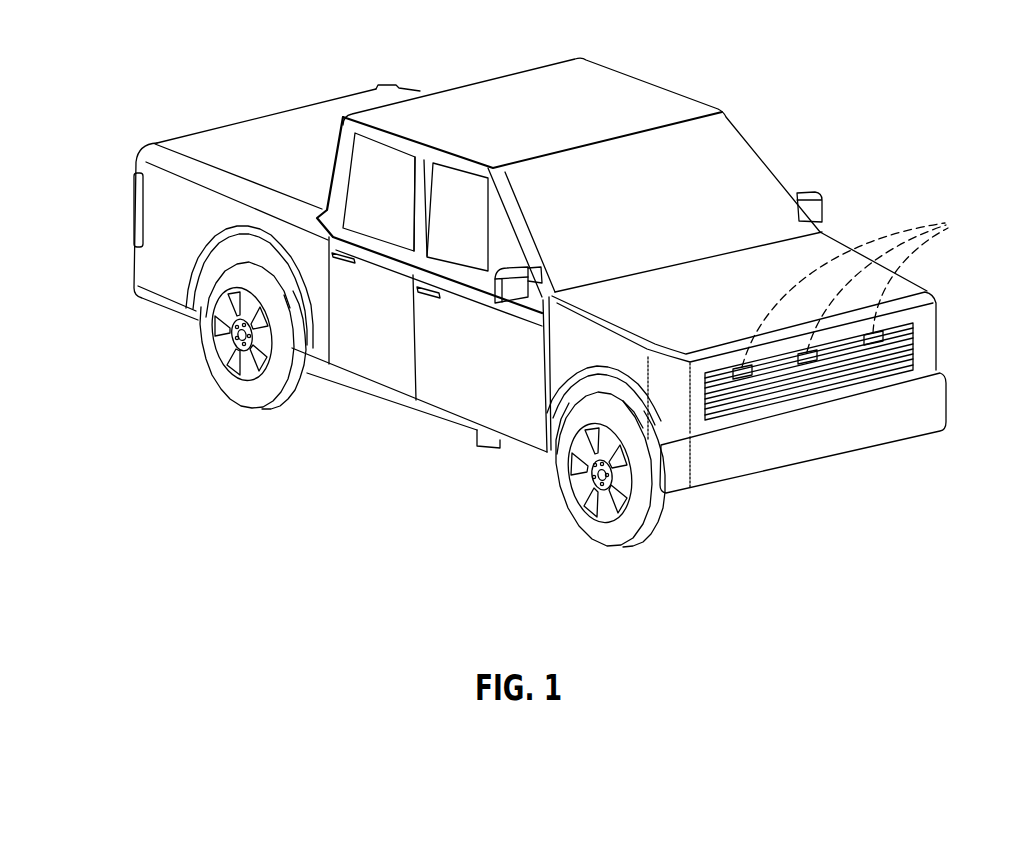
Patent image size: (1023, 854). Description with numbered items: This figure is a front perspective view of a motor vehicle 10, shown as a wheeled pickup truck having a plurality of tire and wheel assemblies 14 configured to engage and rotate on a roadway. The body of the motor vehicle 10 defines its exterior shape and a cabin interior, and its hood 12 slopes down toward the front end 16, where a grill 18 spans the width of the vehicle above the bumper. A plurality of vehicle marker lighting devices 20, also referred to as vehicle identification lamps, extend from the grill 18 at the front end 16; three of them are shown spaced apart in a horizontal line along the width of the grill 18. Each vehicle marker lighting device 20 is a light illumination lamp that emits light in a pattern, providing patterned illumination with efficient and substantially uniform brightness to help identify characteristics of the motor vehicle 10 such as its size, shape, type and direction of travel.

The motor vehicle 10 is at (847, 100).
The hood 12 is at (852, 243).
The tire and wheel assemblies 14 is at (230, 382).
The front end 16 is at (830, 438).
The grill 18 is at (913, 337).
The vehicle marker lighting devices 20 is at (856, 294).